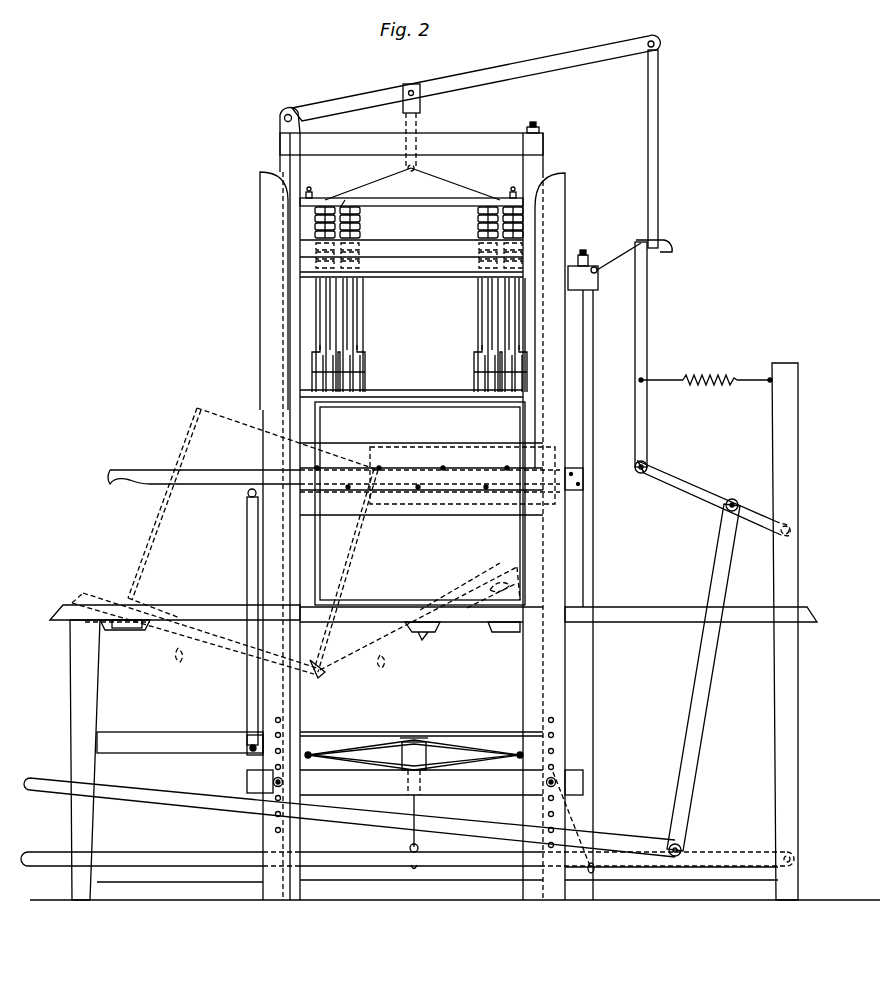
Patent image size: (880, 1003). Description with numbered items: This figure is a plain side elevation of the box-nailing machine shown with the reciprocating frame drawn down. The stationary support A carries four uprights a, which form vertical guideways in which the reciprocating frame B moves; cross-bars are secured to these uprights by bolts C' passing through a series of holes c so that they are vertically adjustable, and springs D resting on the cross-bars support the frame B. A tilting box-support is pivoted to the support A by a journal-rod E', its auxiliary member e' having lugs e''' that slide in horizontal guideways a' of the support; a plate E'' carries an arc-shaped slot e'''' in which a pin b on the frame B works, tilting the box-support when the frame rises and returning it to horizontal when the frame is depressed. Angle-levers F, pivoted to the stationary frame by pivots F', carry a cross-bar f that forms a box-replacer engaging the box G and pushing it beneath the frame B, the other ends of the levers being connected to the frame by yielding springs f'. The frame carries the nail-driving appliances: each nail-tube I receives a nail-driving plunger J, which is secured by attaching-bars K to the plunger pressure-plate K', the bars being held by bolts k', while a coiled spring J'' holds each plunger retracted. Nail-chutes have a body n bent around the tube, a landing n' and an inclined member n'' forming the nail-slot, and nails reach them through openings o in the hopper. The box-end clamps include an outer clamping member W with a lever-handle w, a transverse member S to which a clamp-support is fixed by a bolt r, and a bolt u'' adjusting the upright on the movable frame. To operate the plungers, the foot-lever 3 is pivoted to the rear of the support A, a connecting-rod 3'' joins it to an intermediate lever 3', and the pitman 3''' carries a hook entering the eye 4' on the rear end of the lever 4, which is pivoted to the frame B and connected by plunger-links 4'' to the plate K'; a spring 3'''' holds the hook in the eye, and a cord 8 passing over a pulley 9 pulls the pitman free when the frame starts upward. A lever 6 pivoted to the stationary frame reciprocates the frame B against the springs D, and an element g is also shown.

The stationary support A is at (670, 612).
The reciprocating frame B is at (411, 144).
The bolt u'' is at (542, 114).
The lever 4 is at (470, 84).
The eye 4' is at (656, 151).
The plunger-links 4'' is at (425, 127).
The attaching-bars K is at (411, 187).
The plunger pressure-plate K' is at (336, 190).
The bolts k' is at (410, 182).
The nail-driving plunger J is at (346, 237).
The coiled spring J'' is at (486, 237).
The openings o is at (420, 255).
The body n is at (419, 335).
The landing n' is at (310, 296).
The chute member n'' is at (366, 296).
The nail-tube I is at (362, 346).
The uprights a is at (418, 331).
The guideways a' is at (137, 637).
The transverse member S is at (598, 278).
The bolt r is at (583, 256).
The pulley 9 is at (596, 268).
The cord 8 is at (592, 330).
The foot-lever 3 is at (349, 817).
The intermediate lever 3' is at (714, 496).
The connecting-rod 3'' is at (703, 677).
The connecting-rod (pitman) 3''' is at (660, 357).
The spring 3'''' is at (705, 366).
The lever 6 is at (212, 866).
The box G is at (421, 503).
The outer clamping member W is at (427, 474).
The lever-handle w is at (210, 482).
The cross-bar f is at (262, 513).
The springs f' is at (310, 728).
The angle-levers F is at (239, 621).
The pivots F' is at (239, 731).
The journal-rod E' is at (296, 543).
The plate E'' is at (494, 635).
The pin b is at (457, 628).
The auxiliary member e' is at (275, 660).
The lugs e''' is at (117, 637).
The slot e'''' is at (506, 614).
The springs D is at (350, 755).
The holes c is at (556, 752).
The bolts C' is at (423, 791).
The cord g is at (595, 872).